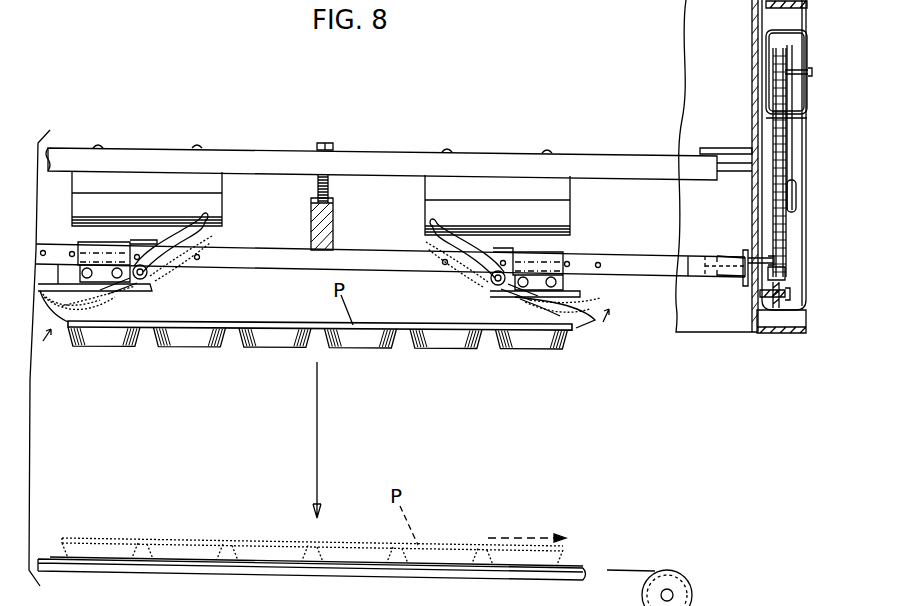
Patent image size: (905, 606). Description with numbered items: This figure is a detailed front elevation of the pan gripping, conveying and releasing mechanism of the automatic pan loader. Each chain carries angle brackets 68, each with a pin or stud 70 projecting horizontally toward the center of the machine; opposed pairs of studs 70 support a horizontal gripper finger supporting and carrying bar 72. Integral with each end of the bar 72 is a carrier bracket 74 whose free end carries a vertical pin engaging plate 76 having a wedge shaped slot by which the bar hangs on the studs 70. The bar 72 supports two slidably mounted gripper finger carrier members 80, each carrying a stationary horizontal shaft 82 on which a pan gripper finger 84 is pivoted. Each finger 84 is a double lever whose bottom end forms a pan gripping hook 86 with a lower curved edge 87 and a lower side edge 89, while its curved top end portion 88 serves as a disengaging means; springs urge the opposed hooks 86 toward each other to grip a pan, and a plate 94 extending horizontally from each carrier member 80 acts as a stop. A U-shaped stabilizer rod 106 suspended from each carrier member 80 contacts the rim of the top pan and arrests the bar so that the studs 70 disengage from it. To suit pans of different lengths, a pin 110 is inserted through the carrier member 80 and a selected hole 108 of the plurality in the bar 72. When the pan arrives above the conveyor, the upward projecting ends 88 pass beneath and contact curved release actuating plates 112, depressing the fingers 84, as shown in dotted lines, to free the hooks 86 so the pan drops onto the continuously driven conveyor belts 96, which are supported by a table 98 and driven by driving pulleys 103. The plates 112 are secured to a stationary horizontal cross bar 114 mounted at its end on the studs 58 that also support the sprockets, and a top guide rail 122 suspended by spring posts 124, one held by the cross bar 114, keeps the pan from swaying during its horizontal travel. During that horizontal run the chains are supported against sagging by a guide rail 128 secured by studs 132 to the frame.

The stud 58 is at (729, 148).
The angle bracket 68 is at (762, 284).
The pin or stud 70 is at (730, 252).
The gripper finger supporting and carrying bar 72 is at (236, 268).
The carrier bracket 74 is at (690, 272).
The pin engaging plate 76 is at (747, 250).
The gripper finger carrier member 80 is at (85, 248).
The horizontal shaft 82 is at (133, 286).
The pan gripper finger 84 is at (160, 266).
The pan gripping hook 86 is at (62, 327).
The lower curved edge 87 is at (578, 333).
The curved top end portion 88 is at (203, 216).
The lower side edge 89 is at (540, 312).
The plate 94 is at (151, 244).
The conveyor belt 96 is at (583, 566).
The table 98 is at (561, 580).
The driving pulley 103 is at (672, 583).
The U-shaped stabilizer rod 106 is at (100, 297).
The hole 108 is at (72, 251).
The pin 110 is at (104, 257).
The release actuating plate 112 is at (72, 202).
The cross bar 114 is at (291, 150).
The top guide rail 122 is at (333, 225).
The spring post 124 is at (329, 189).
The guide rail 128 is at (790, 305).
The stud 132 is at (756, 300).